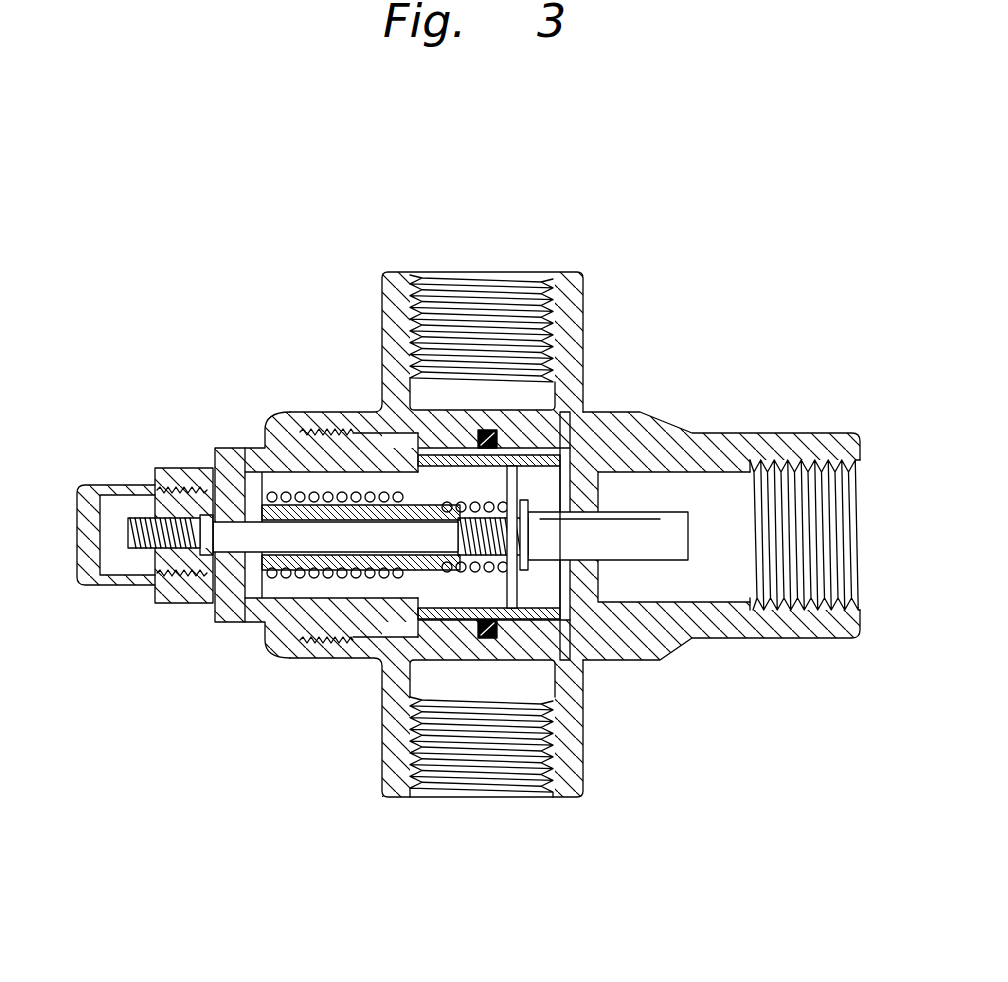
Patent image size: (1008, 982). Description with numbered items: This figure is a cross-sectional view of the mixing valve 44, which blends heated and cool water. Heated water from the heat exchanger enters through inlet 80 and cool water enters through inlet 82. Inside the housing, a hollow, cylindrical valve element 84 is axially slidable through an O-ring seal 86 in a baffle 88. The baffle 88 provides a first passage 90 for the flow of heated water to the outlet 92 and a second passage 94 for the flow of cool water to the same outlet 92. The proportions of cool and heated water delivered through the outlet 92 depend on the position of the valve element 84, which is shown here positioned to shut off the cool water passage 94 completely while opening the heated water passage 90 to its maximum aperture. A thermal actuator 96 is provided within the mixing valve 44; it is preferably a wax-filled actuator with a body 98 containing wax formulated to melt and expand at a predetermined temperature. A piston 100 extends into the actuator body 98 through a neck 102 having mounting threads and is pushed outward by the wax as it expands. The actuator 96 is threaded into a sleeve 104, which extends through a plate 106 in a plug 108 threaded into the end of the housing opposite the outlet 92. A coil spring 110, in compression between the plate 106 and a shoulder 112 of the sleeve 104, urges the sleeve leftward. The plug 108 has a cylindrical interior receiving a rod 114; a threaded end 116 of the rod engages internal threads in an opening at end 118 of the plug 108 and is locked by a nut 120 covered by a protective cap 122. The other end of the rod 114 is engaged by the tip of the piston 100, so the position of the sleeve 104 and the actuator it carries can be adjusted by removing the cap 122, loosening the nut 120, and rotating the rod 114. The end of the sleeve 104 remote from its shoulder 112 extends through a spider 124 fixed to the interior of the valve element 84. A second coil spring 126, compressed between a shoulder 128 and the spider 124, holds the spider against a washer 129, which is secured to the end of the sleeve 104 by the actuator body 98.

The mixing valve 44 is at (629, 352).
The inlet 80 is at (466, 272).
The inlet 82 is at (505, 797).
The valve element 84 is at (456, 636).
The O-ring seal 86 is at (488, 440).
The baffle 88 is at (397, 398).
The first passage 90 is at (580, 412).
The outlet 92 is at (862, 518).
The second passage 94 is at (425, 625).
The thermal actuator 96 is at (655, 508).
The actuator body 98 is at (663, 553).
The piston 100 is at (430, 535).
The neck 102 is at (527, 537).
The sleeve 104 is at (318, 560).
The plate 106 is at (385, 652).
The plug 108 is at (243, 458).
The coil spring 110 is at (261, 445).
The shoulder 112 is at (215, 483).
The rod 114 is at (262, 540).
The threaded end 116 is at (163, 593).
The end 118 is at (148, 500).
The nut 120 is at (130, 580).
The protective cap 122 is at (115, 490).
The spider 124 is at (562, 632).
The second coil spring 126 is at (442, 503).
The shoulder 128 is at (440, 462).
The washer 129 is at (548, 500).